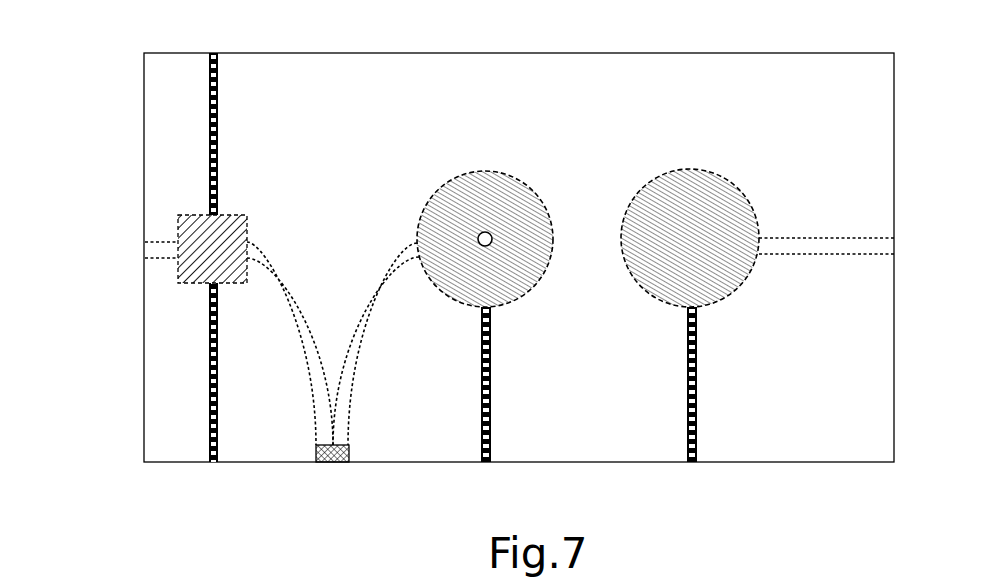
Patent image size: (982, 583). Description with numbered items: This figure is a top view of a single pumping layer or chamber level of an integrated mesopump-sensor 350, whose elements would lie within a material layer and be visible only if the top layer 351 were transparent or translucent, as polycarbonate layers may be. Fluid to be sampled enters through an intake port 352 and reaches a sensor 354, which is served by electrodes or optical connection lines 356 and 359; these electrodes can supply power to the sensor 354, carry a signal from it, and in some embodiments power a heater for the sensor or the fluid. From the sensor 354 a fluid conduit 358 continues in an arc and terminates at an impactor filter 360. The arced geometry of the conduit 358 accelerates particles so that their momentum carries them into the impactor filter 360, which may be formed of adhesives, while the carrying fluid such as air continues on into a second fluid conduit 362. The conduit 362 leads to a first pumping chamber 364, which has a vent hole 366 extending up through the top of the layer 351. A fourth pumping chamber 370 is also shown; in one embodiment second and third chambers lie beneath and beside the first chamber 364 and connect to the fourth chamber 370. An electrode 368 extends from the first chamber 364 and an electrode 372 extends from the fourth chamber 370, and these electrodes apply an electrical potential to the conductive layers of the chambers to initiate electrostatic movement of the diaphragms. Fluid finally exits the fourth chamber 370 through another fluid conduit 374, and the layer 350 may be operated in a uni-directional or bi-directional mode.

The integrated mesopump-sensor 350 is at (497, 53).
The top layer 351 is at (352, 90).
The intake port 352 is at (145, 249).
The sensor 354 is at (178, 270).
The electrode or optical connection line 356 is at (209, 391).
The fluid conduit 358 is at (326, 393).
The electrode or optical connection line 359 is at (218, 87).
The impactor filter 360 is at (333, 462).
The second fluid conduit 362 is at (340, 403).
The first pumping chamber 364 is at (485, 192).
The vent hole 366 is at (492, 241).
The electrode 368 is at (491, 428).
The fourth pumping chamber 370 is at (720, 264).
The electrode 372 is at (697, 440).
The fluid conduit 374 is at (770, 247).